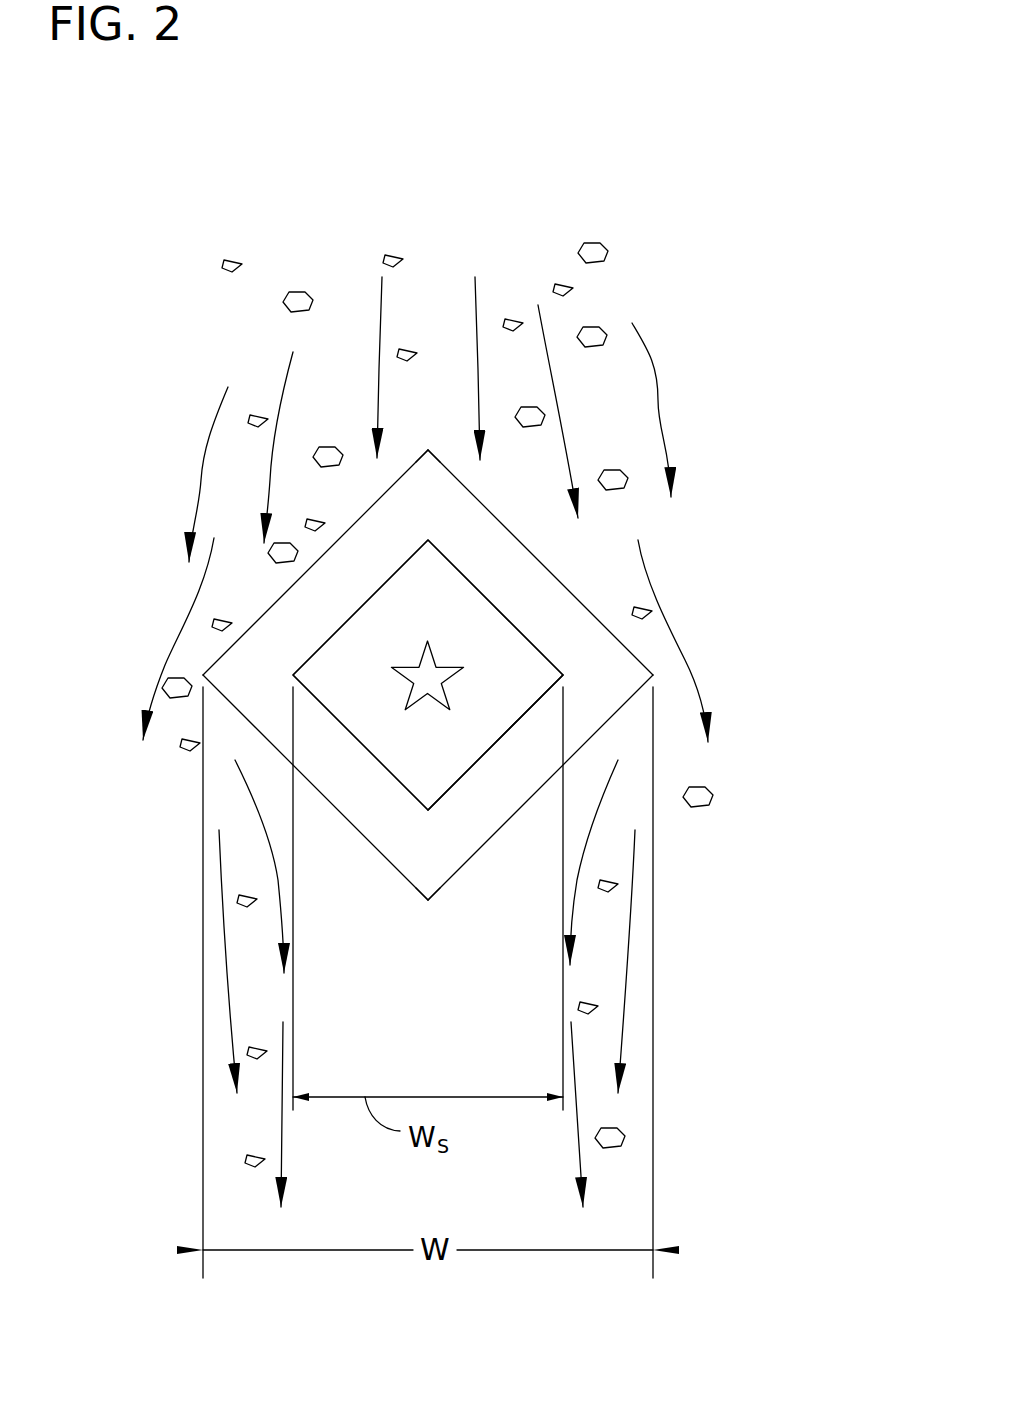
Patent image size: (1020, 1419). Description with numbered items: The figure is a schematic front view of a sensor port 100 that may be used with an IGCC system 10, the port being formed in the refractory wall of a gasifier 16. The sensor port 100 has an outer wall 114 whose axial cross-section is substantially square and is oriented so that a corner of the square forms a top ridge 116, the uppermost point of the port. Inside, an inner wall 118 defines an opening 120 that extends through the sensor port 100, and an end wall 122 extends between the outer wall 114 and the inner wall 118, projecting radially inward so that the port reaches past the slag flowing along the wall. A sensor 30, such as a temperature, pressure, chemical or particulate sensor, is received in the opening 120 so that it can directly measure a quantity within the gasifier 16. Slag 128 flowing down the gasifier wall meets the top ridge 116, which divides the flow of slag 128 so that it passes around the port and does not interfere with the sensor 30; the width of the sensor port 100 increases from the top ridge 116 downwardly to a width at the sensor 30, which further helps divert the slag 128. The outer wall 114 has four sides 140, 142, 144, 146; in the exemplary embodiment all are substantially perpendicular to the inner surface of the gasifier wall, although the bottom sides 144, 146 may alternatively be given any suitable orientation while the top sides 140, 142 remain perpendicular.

The IGCC system 10 is at (668, 153).
The gasifier 16 is at (658, 223).
The sensor 30 is at (435, 658).
The sensor port 100 is at (685, 637).
The outer wall 114 is at (428, 900).
The top ridge 116 is at (428, 450).
The inner wall 118 is at (507, 724).
The opening 120 is at (413, 641).
The end wall 122 is at (518, 794).
The slag 128 is at (345, 345).
The side 140 is at (360, 515).
The side 142 is at (533, 553).
The side 144 is at (510, 820).
The side 146 is at (358, 830).